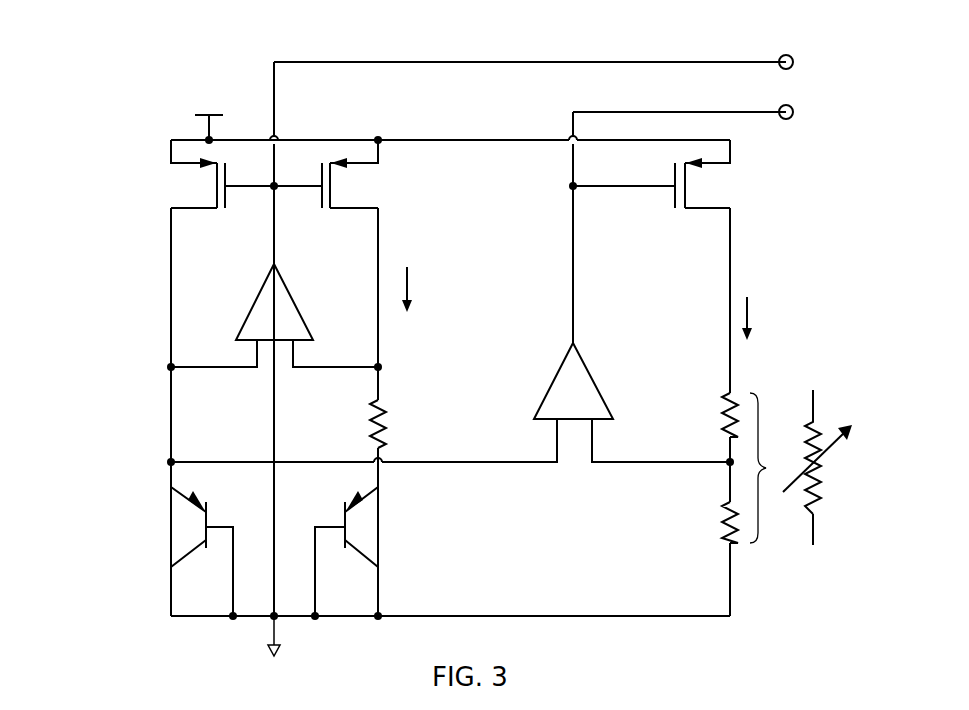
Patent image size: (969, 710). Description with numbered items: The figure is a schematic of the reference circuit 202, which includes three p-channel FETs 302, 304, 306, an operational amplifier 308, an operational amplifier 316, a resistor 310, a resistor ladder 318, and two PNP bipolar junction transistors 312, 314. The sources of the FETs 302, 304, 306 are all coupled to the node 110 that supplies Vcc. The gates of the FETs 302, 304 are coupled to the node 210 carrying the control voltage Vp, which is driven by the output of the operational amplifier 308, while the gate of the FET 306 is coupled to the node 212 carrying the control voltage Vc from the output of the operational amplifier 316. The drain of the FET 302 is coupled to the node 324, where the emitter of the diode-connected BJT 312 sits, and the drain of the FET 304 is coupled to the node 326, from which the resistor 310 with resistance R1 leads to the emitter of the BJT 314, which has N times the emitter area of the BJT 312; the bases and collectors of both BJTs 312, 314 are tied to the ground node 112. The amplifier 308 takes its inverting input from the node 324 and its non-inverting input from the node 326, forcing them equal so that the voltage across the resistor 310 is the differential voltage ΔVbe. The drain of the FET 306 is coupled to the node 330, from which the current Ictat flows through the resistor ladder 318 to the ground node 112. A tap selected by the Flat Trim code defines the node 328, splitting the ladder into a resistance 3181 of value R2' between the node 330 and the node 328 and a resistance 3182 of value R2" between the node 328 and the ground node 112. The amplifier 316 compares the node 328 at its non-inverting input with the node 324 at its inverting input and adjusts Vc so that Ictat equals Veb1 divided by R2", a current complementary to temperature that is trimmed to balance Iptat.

The reference circuit 202 is at (173, 36).
The node 110 is at (203, 114).
The node 210 is at (782, 55).
The node 212 is at (784, 120).
The p-channel field effect transistor 302 is at (196, 215).
The p-channel field effect transistor 304 is at (358, 212).
The p-channel field effect transistor 306 is at (707, 212).
The operational amplifier 308 is at (300, 291).
The operational amplifier 316 is at (592, 372).
The resistor 310 is at (372, 404).
The bipolar junction transistor 312 is at (209, 510).
The bipolar junction transistor 314 is at (342, 510).
The ground node 112 is at (278, 652).
The resistance 3181 is at (727, 397).
The resistance 3182 is at (716, 545).
The resistor ladder 318 is at (822, 507).
The node 324 is at (168, 458).
The node 326 is at (382, 365).
The node 328 is at (620, 467).
The node 330 is at (732, 242).